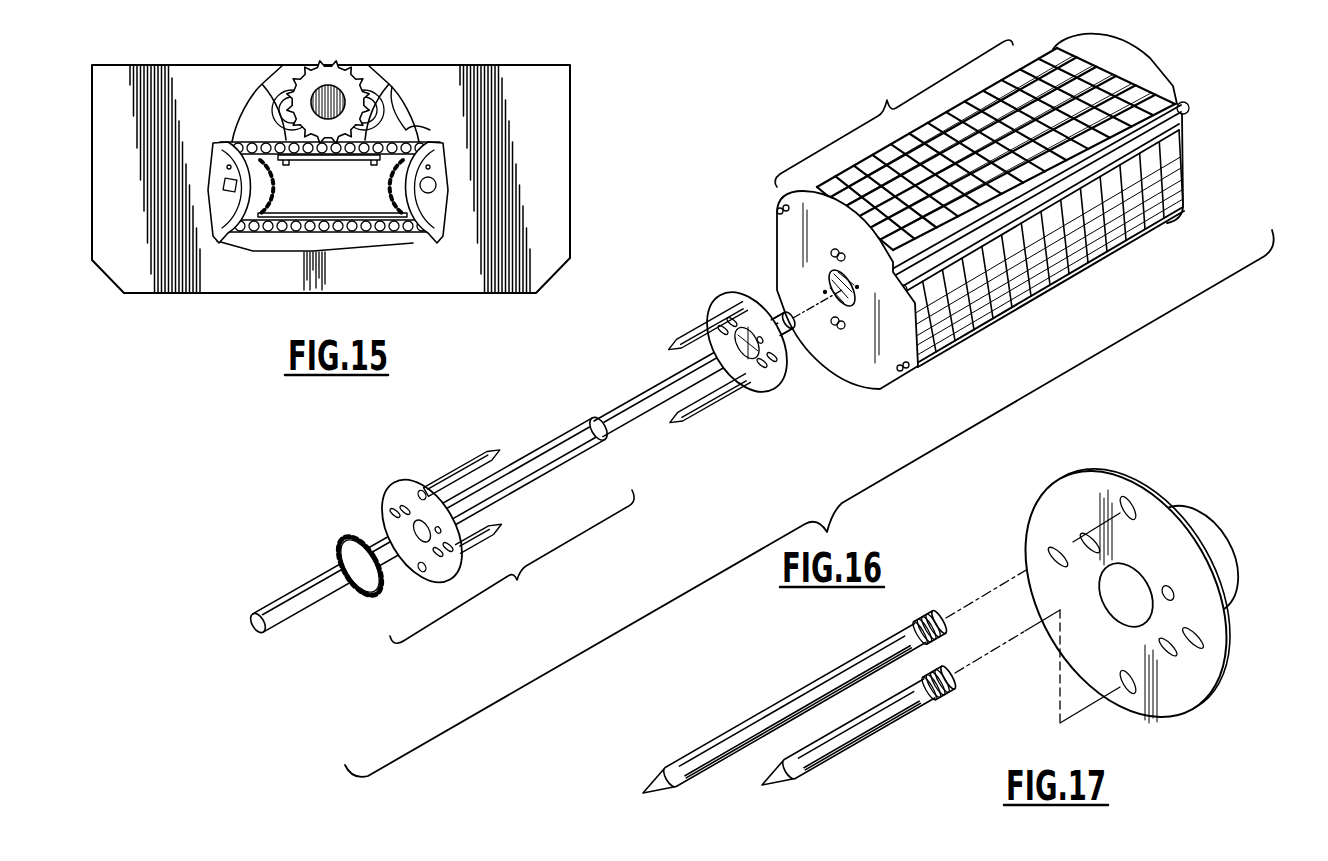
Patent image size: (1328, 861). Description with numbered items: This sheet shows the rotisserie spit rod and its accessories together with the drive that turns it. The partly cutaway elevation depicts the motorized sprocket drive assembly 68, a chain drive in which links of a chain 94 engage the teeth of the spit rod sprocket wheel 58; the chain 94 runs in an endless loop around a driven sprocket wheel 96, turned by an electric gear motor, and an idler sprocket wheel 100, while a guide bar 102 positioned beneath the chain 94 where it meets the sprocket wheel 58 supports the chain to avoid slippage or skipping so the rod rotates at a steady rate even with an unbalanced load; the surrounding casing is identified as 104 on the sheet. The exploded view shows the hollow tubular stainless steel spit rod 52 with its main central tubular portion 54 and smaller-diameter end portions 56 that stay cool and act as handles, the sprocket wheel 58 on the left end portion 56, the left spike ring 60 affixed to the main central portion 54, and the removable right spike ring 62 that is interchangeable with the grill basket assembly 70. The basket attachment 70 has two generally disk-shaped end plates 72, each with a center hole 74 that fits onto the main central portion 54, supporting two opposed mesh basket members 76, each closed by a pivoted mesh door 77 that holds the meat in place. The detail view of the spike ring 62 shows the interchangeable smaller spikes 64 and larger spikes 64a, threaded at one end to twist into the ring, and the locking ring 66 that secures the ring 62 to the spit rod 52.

In FIG. 16, the rotisserie spit rod 52 is at (535, 449).
In FIG. 16, the main central tubular portion 54 is at (527, 445).
In FIG. 16, the end portions 56 is at (277, 608).
In FIG. 15, the sprocket wheel 58 is at (267, 127).
In FIG. 16, the sprocket wheel 58 is at (342, 540).
In FIG. 16, the left spike ring 60 is at (408, 478).
In FIG. 16, the removable right spike ring 62 is at (707, 300).
In FIG. 17, the removable right spike ring 62 is at (1138, 728).
In FIG. 17, the smaller spikes 64 is at (840, 763).
In FIG. 17, the larger spikes 64a is at (716, 769).
In FIG. 17, the locking ring 66 is at (1228, 577).
In FIG. 15, the motorized sprocket drive assembly 68 is at (416, 51).
In FIG. 16, the grill basket assembly 70 is at (979, 203).
In FIG. 16, the end plates 72 is at (1137, 58).
In FIG. 16, the center hole 74 is at (853, 310).
In FIG. 16, the mesh basket members 76 is at (1047, 273).
In FIG. 16, the mesh door 77 is at (1013, 100).
In FIG. 15, the chain 94 is at (400, 123).
In FIG. 15, the driven sprocket wheel 96 is at (260, 233).
In FIG. 15, the idler sprocket wheel 100 is at (413, 233).
In FIG. 15, the guide bar 102 is at (328, 163).
In FIG. 15, the frame 104 is at (103, 247).